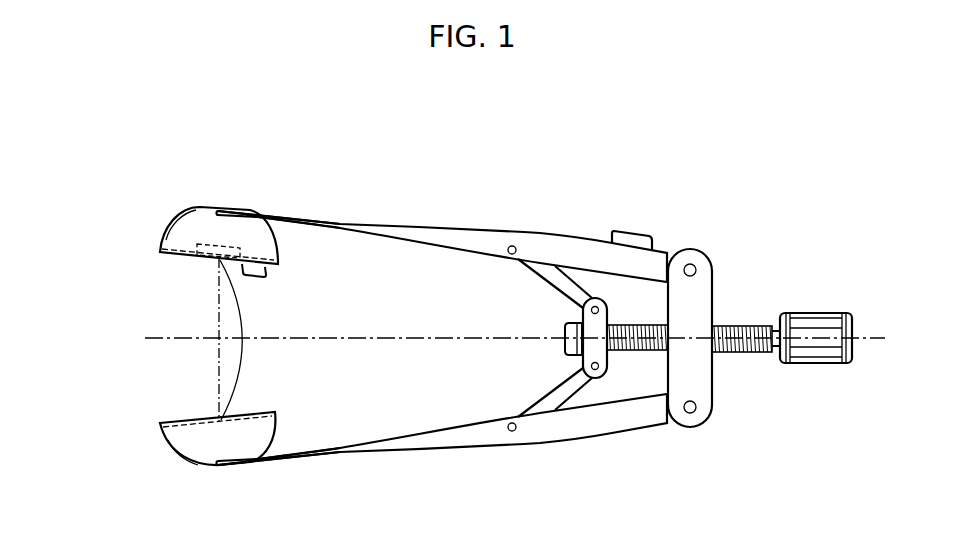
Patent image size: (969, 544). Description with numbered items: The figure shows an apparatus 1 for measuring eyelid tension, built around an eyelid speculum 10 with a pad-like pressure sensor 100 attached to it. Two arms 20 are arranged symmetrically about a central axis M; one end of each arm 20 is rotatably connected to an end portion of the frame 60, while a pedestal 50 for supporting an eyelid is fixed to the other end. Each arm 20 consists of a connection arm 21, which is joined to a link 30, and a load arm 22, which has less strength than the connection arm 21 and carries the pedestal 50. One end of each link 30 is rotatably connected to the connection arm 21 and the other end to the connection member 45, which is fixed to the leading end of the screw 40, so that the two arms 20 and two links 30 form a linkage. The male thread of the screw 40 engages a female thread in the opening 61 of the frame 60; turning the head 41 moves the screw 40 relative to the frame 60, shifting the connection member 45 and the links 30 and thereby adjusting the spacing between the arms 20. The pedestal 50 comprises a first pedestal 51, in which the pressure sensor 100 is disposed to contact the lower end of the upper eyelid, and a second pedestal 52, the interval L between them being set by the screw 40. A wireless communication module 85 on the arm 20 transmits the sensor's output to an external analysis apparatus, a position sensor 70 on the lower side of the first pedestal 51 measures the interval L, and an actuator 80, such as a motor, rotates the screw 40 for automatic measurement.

The apparatus for measuring eyelid tension 1 is at (393, 530).
The eyelid speculum 10 is at (352, 144).
The arm 20 is at (480, 220).
The connection arm 21 is at (455, 237).
The load arm 22 is at (317, 213).
The link 30 is at (568, 288).
The screw 40 is at (737, 355).
The head 41 is at (772, 327).
The connection member 45 is at (600, 376).
The pedestal 50 is at (87, 236).
The first pedestal 51 is at (157, 245).
The second pedestal 52 is at (157, 437).
The frame 60 is at (692, 428).
The opening 61 is at (716, 328).
The position sensor 70 is at (265, 277).
The actuator 80 is at (817, 320).
The wireless communication module 85 is at (627, 235).
The pressure sensor 100 is at (201, 243).
The interval L is at (232, 340).
The central axis M is at (525, 339).